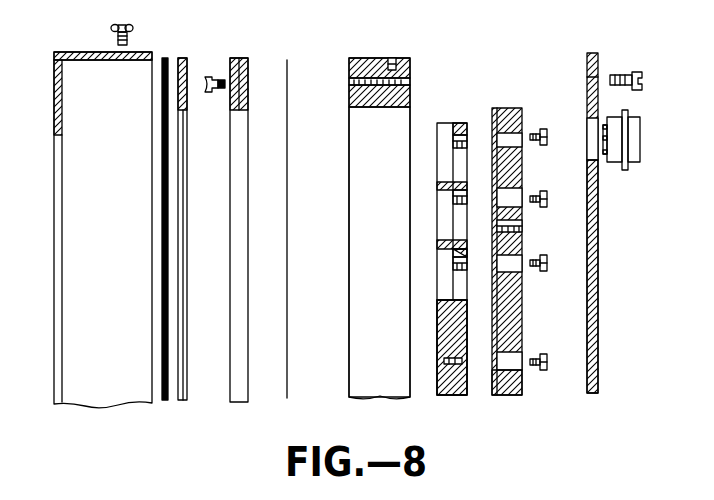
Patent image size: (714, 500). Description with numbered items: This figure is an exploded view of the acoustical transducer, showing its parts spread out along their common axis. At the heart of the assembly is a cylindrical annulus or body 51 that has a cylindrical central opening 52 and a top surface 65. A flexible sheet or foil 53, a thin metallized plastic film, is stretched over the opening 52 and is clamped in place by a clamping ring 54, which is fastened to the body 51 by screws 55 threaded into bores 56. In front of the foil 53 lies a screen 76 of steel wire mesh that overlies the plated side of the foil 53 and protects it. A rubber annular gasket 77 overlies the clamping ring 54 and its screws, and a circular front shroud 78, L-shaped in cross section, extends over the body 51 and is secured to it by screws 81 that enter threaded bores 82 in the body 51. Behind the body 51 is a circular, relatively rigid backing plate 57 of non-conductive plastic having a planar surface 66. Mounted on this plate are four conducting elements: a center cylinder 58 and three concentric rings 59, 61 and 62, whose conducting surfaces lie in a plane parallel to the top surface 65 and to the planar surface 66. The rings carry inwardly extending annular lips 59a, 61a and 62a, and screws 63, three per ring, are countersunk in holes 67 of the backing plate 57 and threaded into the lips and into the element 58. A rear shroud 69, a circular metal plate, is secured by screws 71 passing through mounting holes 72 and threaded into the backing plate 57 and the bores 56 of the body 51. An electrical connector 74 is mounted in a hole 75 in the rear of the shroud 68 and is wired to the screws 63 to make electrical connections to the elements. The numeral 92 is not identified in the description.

The rubber annular gasket 77 is at (88, 52).
The screws 81 is at (132, 28).
The circular front shroud 78 is at (183, 58).
The screen 76 is at (167, 400).
The screws 55 is at (206, 78).
The clamping ring 54 is at (243, 58).
The flexible sheet or foil 53 is at (287, 398).
The cylindrical annulus or body 51 is at (369, 57).
The threaded bores 82 is at (392, 57).
The bores 56 is at (349, 80).
The top surface 65 is at (349, 91).
The cylindrical central opening 52 is at (370, 108).
The concentric ring 62 is at (440, 123).
The inwardly extending annular lip 62a is at (473, 120).
The shroud 68 is at (462, 140).
The inwardly extending annular lip 61a is at (455, 183).
The concentric ring 61 is at (453, 191).
The inwardly extending annular lip 59a is at (445, 243).
The concentric ring 59 is at (446, 257).
The pin 92 is at (460, 262).
The cylinder 58 is at (451, 395).
The backing plate 57 is at (498, 108).
The planar surface 66 is at (498, 356).
The screws 63 is at (540, 128).
The holes 67 is at (527, 257).
The mounting holes 72 is at (598, 78).
The screws 71 is at (645, 78).
The electrical connector 74 is at (640, 134).
The hole 75 is at (596, 155).
The rear shroud 69 is at (598, 386).